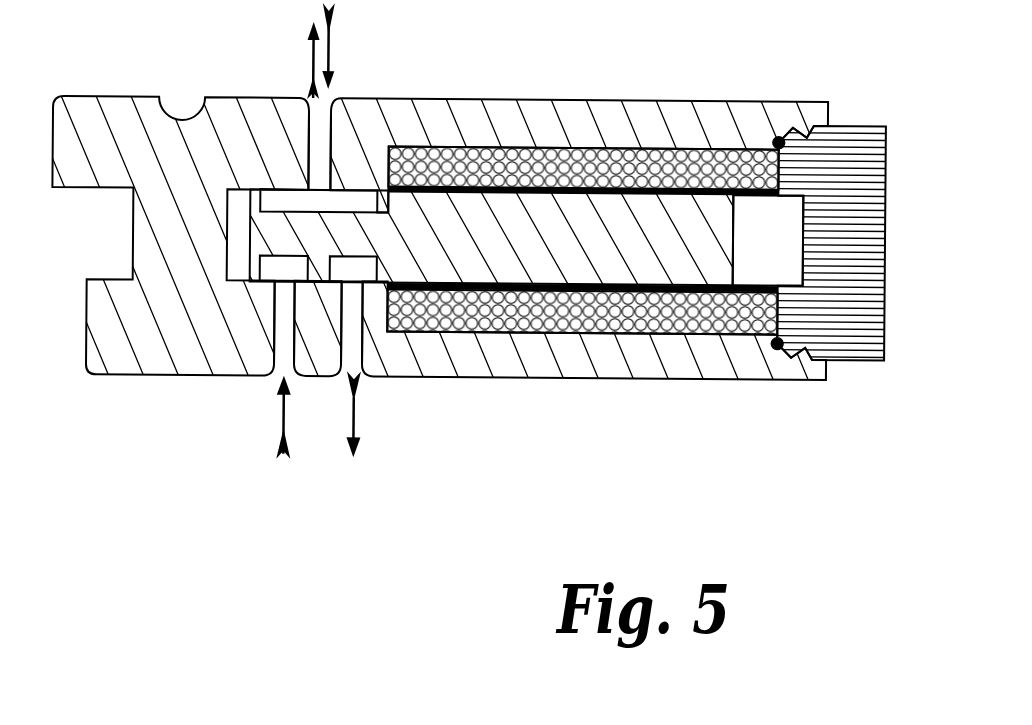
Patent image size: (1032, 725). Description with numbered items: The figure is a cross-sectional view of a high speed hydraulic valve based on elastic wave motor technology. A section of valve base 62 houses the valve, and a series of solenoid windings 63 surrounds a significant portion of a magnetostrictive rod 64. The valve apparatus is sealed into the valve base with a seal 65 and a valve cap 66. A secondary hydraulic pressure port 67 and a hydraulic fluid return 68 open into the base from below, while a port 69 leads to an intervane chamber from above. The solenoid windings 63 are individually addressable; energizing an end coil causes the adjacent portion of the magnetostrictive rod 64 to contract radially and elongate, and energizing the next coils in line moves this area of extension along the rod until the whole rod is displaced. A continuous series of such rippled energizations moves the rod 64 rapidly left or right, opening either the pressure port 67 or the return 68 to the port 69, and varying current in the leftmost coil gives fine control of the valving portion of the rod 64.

The section of valve base 62 is at (118, 137).
The solenoid windings 63 is at (657, 157).
The magnetostrictive rod 64 is at (473, 240).
The seal 65 is at (776, 345).
The valve cap 66 is at (833, 325).
The secondary hydraulic pressure port 67 is at (273, 375).
The hydraulic fluid return 68 is at (365, 375).
The port to intervane chamber 69 is at (329, 100).